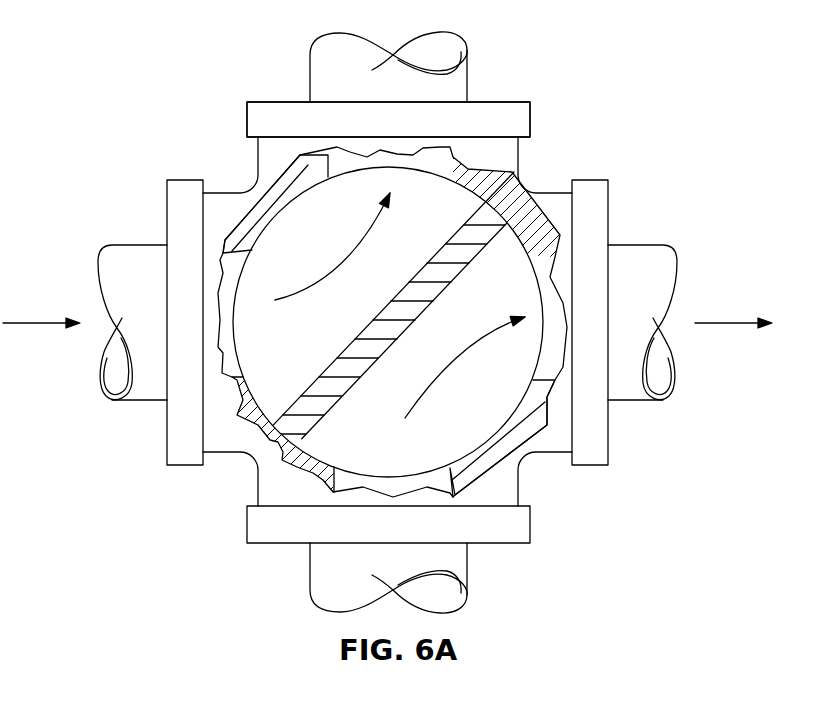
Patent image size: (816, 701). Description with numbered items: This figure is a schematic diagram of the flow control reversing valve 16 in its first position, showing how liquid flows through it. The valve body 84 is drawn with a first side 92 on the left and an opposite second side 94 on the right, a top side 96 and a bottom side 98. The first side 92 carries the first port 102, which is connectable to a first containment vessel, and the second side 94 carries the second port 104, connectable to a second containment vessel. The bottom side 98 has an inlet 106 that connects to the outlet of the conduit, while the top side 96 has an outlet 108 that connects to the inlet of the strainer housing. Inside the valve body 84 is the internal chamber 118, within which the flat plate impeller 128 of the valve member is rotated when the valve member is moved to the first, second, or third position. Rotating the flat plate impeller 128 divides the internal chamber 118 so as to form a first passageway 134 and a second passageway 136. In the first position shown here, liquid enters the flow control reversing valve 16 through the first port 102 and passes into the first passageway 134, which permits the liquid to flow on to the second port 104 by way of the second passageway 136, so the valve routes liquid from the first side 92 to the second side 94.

The flow control reversing valve 16 is at (517, 102).
The valve body 84 is at (260, 458).
The first side 92 is at (167, 433).
The second side 94 is at (610, 203).
The top side 96 is at (282, 102).
The bottom side 98 is at (510, 543).
The first port 102 is at (100, 390).
The second port 104 is at (678, 390).
The inlet 106 is at (460, 607).
The outlet 108 is at (453, 37).
The internal chamber 118 is at (292, 202).
The flat plate impeller 128 is at (358, 338).
The first passageway 134 is at (253, 248).
The second passageway 136 is at (520, 403).